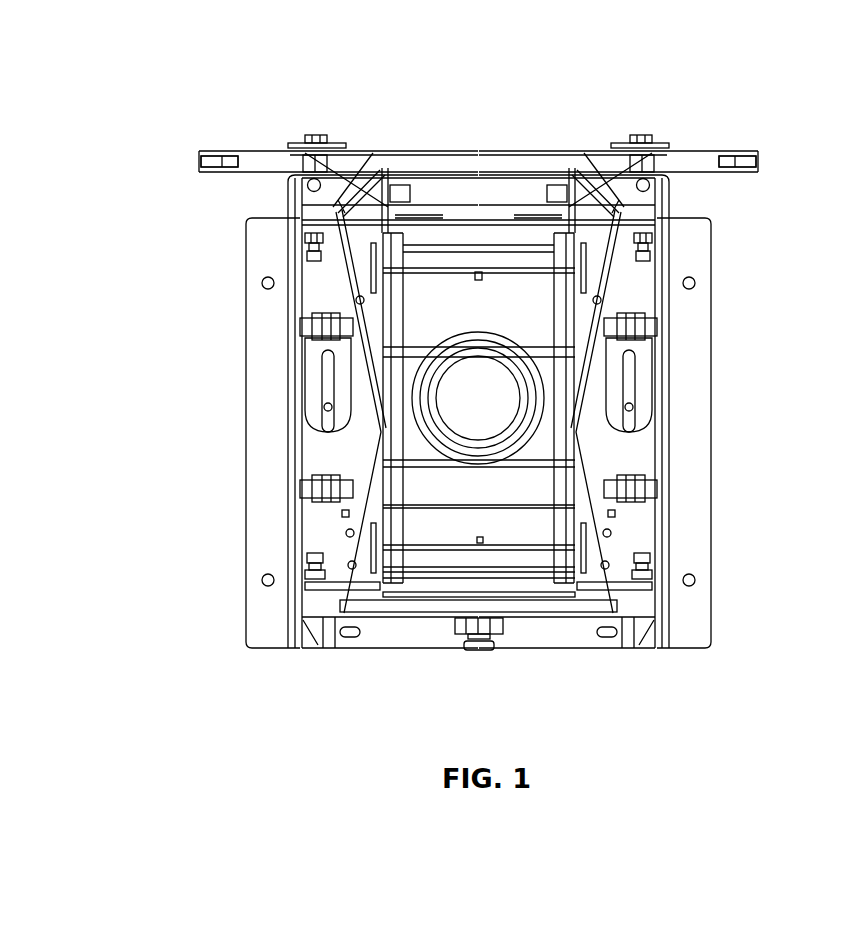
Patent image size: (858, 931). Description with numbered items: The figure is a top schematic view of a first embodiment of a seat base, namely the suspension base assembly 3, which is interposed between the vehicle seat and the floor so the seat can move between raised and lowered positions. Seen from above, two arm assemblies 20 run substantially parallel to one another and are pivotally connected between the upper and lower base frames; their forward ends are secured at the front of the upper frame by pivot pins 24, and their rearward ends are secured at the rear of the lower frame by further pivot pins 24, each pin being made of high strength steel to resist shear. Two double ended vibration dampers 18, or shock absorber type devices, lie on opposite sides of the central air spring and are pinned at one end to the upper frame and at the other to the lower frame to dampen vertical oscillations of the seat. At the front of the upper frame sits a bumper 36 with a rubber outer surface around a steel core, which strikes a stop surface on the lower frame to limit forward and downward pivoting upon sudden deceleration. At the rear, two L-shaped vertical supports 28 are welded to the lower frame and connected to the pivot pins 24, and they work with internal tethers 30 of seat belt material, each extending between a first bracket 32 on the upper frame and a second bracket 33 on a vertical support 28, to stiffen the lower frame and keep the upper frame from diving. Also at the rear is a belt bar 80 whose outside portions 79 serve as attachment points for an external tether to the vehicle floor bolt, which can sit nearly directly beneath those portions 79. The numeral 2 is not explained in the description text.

The hose reel assembly 2 is at (737, 108).
The suspension base assembly 3 is at (703, 673).
The double ended vibration dampers 18 is at (305, 392).
The arm assemblies 20 is at (392, 430).
The pivot pins 24 is at (452, 558).
The vertical supports 28 is at (413, 212).
The internal tethers 30 is at (320, 172).
The first bracket 32 is at (315, 135).
The second bracket 33 is at (381, 172).
The bumper 36 is at (527, 648).
The outside portions 79 is at (198, 160).
The belt bar 80 is at (273, 150).